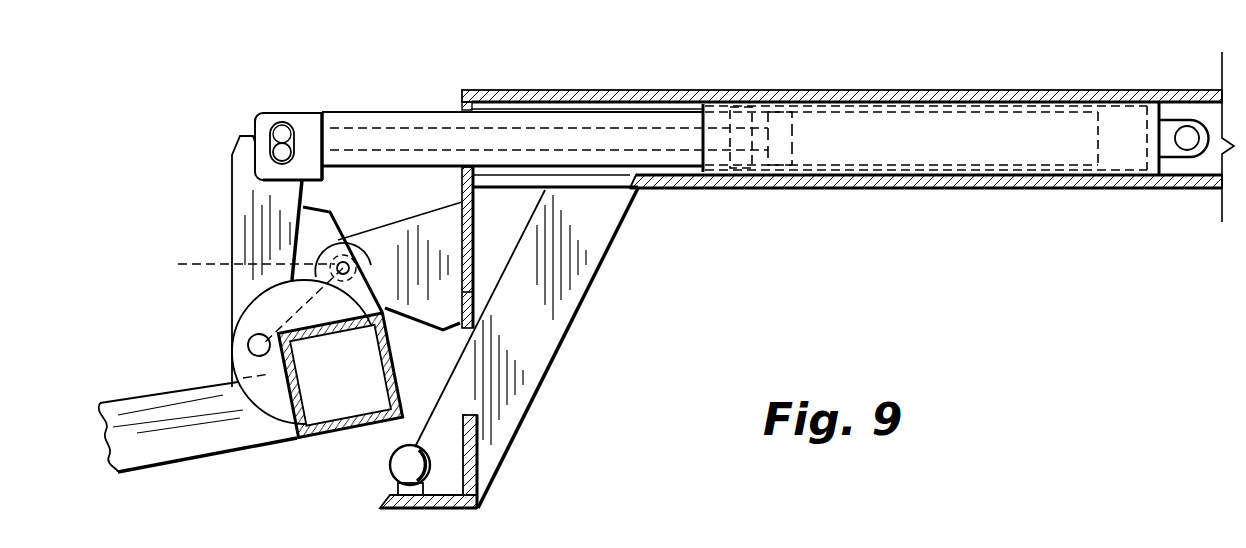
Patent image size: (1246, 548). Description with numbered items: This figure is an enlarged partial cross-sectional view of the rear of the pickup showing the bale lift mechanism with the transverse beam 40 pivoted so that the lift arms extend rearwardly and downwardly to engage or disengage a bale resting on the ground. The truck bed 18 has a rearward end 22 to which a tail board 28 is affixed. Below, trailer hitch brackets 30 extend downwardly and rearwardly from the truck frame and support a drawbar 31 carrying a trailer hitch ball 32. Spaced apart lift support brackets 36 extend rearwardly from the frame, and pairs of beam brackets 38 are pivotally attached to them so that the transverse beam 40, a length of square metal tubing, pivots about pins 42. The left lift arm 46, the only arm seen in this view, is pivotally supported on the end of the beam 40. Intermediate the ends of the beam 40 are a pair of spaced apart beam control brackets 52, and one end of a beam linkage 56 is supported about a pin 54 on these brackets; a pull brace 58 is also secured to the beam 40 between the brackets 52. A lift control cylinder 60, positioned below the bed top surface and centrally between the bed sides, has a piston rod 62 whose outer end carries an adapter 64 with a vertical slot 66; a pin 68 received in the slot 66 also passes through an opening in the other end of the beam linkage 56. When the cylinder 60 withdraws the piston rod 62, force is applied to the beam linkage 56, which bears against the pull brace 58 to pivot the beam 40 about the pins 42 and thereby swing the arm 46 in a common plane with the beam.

The bed 18 is at (1044, 68).
The rearward end 22 is at (458, 100).
The tail board 28 is at (472, 314).
The trailer hitch brackets 30 is at (520, 400).
The drawbar 31 is at (443, 492).
The trailer hitch ball 32 is at (400, 468).
The lift support brackets 36 is at (443, 240).
The beam brackets 38 is at (366, 262).
The transverse beam 40 is at (315, 435).
The pins 42 is at (239, 271).
The left lift arm 46 is at (142, 413).
The beam control brackets 52 is at (254, 300).
The pin 54 is at (250, 356).
The beam linkage 56 is at (245, 196).
The pull brace 58 is at (307, 237).
The lift control cylinder 60 is at (873, 128).
The piston rod 62 is at (618, 122).
The adapter 64 is at (308, 120).
The vertical slot 66 is at (275, 123).
The pin 68 is at (277, 148).